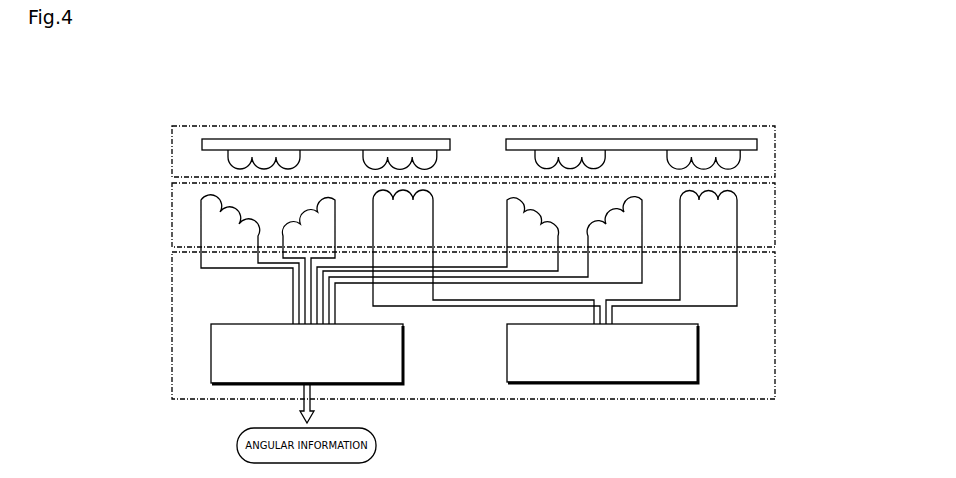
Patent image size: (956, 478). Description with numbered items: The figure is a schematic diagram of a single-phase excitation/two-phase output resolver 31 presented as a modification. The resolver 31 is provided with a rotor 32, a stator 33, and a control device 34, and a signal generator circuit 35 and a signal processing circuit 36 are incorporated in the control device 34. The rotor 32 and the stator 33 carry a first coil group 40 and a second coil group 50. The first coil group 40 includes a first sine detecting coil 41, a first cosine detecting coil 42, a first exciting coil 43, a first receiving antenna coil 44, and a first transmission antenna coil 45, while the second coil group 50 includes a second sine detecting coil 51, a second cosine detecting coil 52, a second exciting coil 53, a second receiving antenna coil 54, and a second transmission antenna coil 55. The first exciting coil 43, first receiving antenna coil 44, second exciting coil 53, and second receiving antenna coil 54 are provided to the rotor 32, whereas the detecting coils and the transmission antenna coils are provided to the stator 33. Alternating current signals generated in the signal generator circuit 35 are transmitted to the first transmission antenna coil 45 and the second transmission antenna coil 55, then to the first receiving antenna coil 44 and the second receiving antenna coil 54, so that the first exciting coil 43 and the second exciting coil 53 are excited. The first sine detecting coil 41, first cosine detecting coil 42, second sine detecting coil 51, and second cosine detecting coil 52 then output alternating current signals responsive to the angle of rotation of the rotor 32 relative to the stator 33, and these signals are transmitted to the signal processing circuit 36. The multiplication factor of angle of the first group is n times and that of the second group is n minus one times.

The resolver 31 is at (509, 222).
The rotor 32 is at (777, 141).
The stator 33 is at (777, 197).
The control device 34 is at (777, 300).
The signal generator circuit 35 is at (699, 353).
The signal processing circuit 36 is at (404, 353).
The first coil group 40 is at (326, 109).
The first sine detecting coil 41 is at (212, 190).
The first cosine detecting coil 42 is at (321, 189).
The first exciting coil 43 is at (228, 151).
The first receiving antenna coil 44 is at (360, 150).
The first transmission antenna coil 45 is at (440, 188).
The second coil group 50 is at (631, 107).
The second sine detecting coil 51 is at (523, 188).
The second cosine detecting coil 52 is at (626, 188).
The second exciting coil 53 is at (529, 153).
The second receiving antenna coil 54 is at (667, 152).
The second transmission antenna coil 55 is at (745, 188).